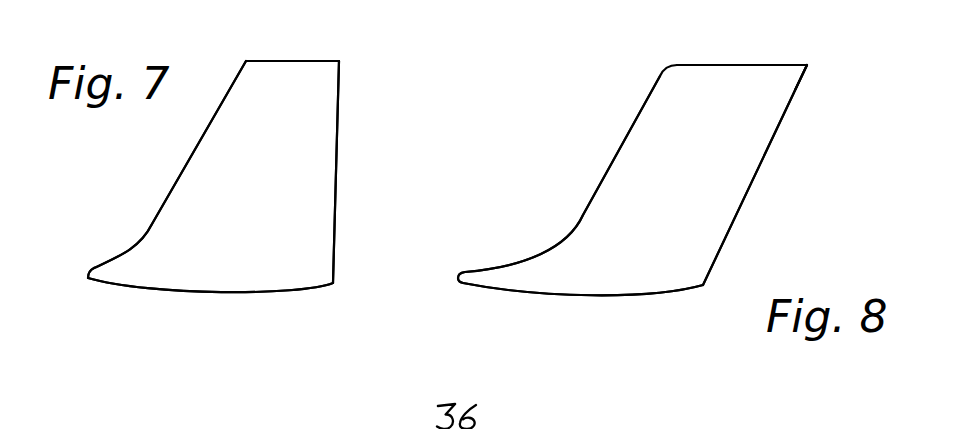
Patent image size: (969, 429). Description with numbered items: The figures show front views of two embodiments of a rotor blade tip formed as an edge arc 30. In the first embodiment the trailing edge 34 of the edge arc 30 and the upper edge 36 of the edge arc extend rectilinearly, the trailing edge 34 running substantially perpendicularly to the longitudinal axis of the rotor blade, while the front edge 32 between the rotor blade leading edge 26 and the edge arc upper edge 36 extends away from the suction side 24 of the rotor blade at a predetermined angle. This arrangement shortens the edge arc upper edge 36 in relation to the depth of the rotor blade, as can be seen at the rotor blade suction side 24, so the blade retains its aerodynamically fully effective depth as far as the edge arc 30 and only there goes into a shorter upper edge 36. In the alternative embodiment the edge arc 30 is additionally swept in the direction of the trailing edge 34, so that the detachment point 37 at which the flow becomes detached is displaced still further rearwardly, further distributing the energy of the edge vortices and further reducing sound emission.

In FIG. 7, the suction side 24 is at (240, 293).
In FIG. 8, the suction side 24 is at (617, 297).
In FIG. 7, the rotor blade leading edge 26 is at (84, 281).
In FIG. 8, the rotor blade leading edge 26 is at (452, 287).
In FIG. 7, the edge arc 30 is at (275, 196).
In FIG. 8, the edge arc 30 is at (700, 195).
In FIG. 7, the front edge 32 is at (177, 169).
In FIG. 8, the front edge 32 is at (638, 118).
In FIG. 7, the trailing edge 34 is at (339, 152).
In FIG. 8, the trailing edge 34 is at (757, 173).
In FIG. 7, the upper edge 36 is at (298, 61).
In FIG. 8, the upper edge 36 is at (748, 65).
In FIG. 8, the detachment point 37 is at (815, 62).